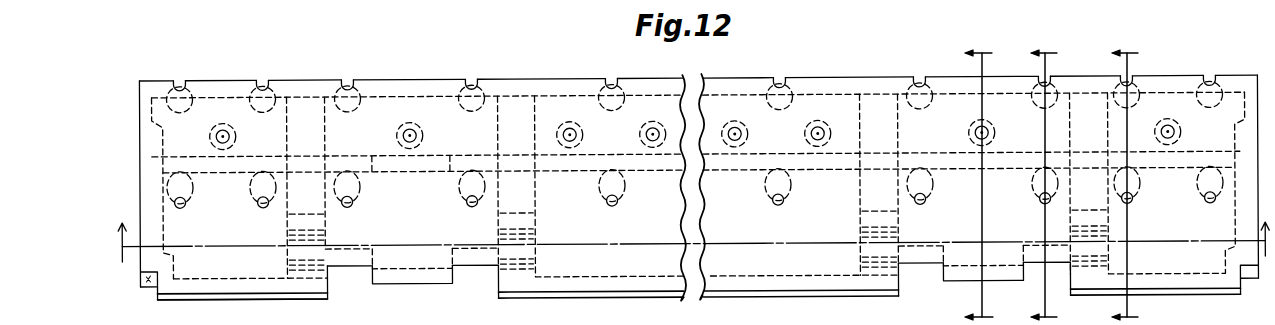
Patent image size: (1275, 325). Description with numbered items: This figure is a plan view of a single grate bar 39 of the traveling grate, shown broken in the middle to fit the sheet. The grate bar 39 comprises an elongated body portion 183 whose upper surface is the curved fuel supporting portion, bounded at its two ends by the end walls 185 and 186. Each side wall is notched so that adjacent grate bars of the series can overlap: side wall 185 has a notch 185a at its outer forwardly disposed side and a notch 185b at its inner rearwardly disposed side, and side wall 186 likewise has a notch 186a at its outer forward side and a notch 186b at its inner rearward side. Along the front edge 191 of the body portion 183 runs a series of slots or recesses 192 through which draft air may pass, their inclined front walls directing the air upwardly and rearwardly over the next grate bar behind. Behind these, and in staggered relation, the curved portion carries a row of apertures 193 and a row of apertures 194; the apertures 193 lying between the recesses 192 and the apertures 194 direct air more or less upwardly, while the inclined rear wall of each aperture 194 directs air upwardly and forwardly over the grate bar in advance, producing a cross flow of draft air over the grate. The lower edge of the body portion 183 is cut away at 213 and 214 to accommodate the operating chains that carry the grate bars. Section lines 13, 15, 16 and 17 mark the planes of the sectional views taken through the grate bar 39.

The section line 13- 13 is at (694, 230).
The section line 15- 15 is at (1112, 185).
The section line 16- 16 is at (966, 185).
The section line 17- 17 is at (1031, 185).
The grate bar 39 is at (163, 303).
The body portion 183 is at (812, 108).
The end wall 185 is at (139, 173).
The notch 185a is at (146, 283).
The notch 185b is at (212, 139).
The end wall 186 is at (1260, 86).
The notch 186a is at (1250, 288).
The notch 186b is at (1243, 114).
The front edge 191 is at (517, 81).
The slots or recesses 192 is at (179, 80).
The apertures 193 is at (232, 132).
The apertures 194 is at (248, 214).
The cutaway 213 is at (417, 293).
The cutaway 214 is at (960, 292).